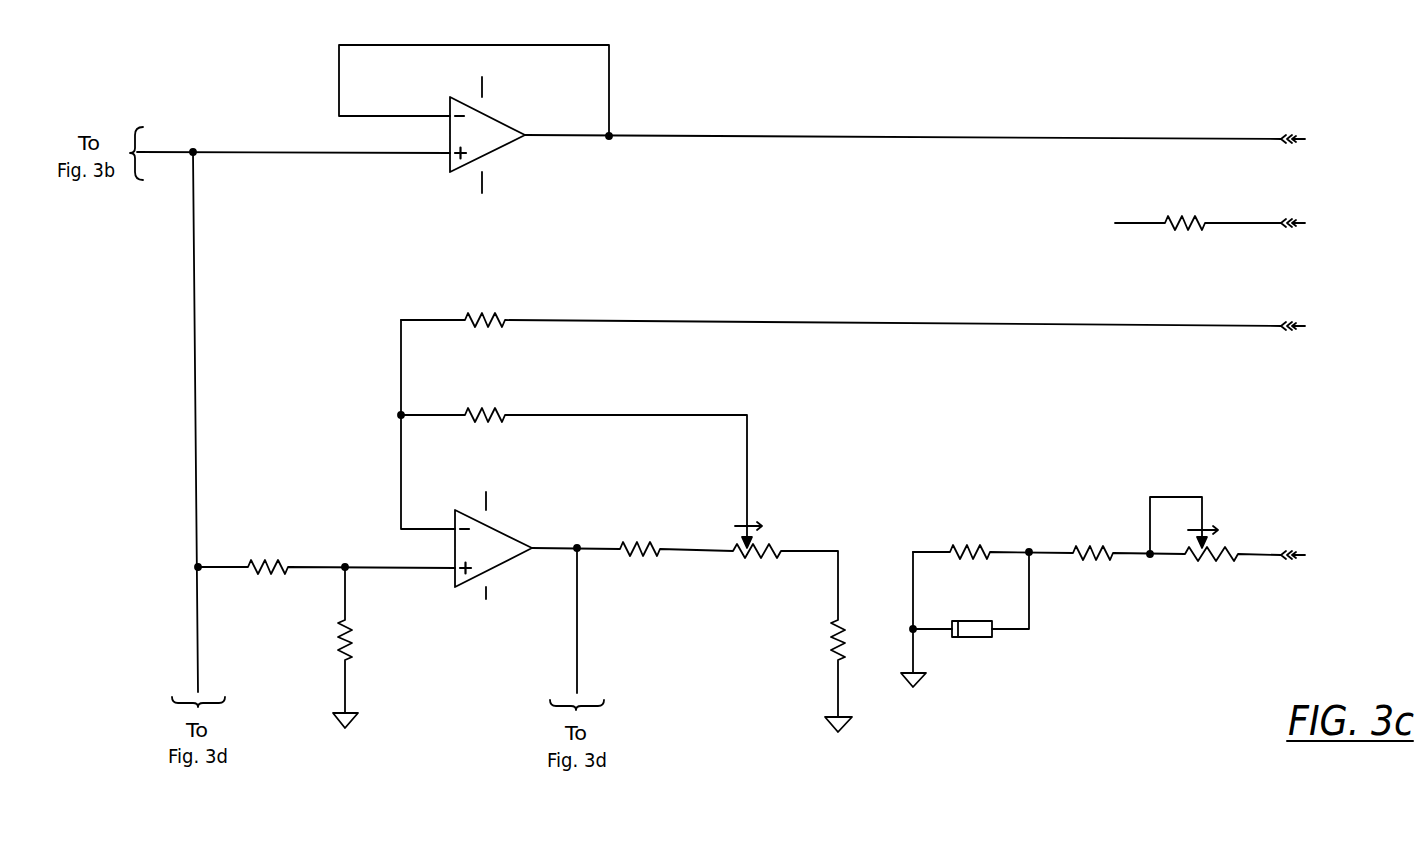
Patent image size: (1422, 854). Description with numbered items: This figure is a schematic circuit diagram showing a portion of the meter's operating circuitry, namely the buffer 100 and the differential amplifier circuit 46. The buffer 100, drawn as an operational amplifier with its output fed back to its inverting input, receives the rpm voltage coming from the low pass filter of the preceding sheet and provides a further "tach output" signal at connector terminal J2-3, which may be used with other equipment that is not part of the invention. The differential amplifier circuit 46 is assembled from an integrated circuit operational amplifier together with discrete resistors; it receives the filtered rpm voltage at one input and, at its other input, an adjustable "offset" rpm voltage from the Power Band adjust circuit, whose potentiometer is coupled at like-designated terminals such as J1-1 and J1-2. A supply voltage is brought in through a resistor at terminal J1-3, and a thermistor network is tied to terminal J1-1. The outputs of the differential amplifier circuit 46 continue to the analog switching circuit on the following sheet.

The buffer 100 is at (452, 186).
The differential amplifier circuit 46 is at (462, 634).
The connector J2 pin 3 output J2-3 is at (923, 124).
The connector J1 pin 3 (+10V supply) J1-3 is at (1190, 213).
The connector J1 pin 2 feedback input J1-2 is at (862, 309).
The connector J1 pin 1 thermistor network input J1-1 is at (1115, 592).